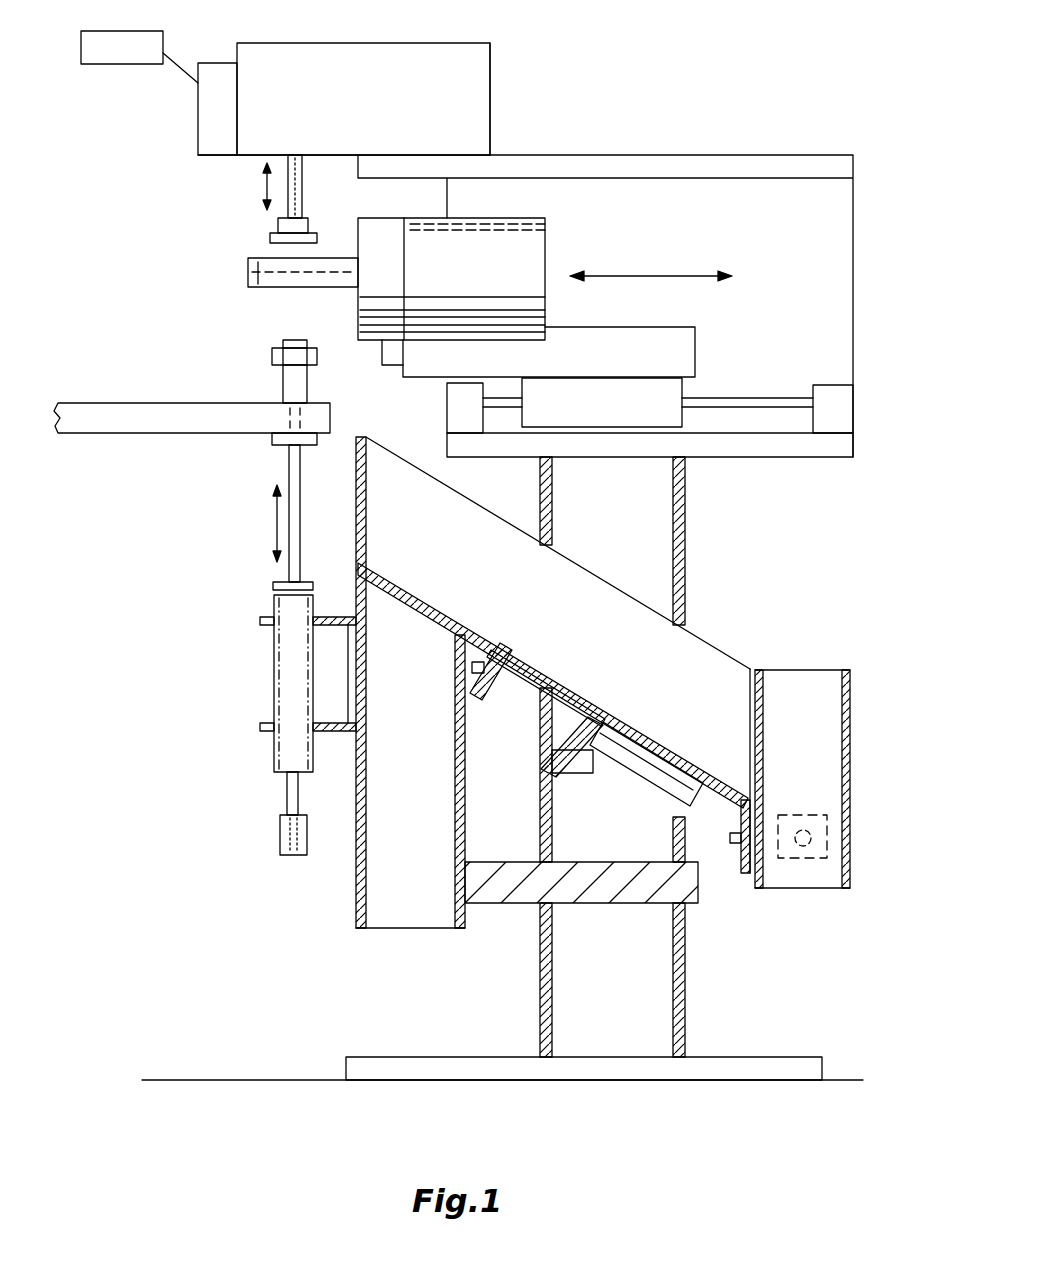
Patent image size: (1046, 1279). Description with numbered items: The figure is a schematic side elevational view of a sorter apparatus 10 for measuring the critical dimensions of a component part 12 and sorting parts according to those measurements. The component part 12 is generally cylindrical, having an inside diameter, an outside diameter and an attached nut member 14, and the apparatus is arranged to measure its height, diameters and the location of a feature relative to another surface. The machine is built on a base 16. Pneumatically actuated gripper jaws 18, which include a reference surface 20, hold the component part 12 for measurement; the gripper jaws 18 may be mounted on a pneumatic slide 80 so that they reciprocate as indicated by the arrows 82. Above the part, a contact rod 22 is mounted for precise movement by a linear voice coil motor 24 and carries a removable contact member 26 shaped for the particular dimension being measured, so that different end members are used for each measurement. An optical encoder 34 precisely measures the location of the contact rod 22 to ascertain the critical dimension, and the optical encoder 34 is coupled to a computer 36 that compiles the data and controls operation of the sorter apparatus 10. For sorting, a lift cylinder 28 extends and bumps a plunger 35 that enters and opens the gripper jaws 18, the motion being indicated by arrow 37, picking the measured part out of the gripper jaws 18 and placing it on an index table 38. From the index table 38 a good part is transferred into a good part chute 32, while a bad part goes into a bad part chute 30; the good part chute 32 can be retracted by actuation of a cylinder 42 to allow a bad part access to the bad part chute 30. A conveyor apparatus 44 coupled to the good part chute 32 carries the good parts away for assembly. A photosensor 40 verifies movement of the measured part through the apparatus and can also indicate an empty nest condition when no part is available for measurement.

The sorter apparatus 10 is at (190, 900).
The component part 12 is at (290, 385).
The nut member 14 is at (272, 358).
The base 16 is at (686, 985).
The gripper jaws 18 is at (253, 278).
The reference surface 20 is at (258, 284).
The contact rod 22 is at (303, 183).
The linear voice coil motor 24 is at (483, 102).
The removable contact member 26 is at (276, 219).
The lift cylinder 28 is at (280, 668).
The bad part chute 30 is at (393, 905).
The good part chute 32 is at (693, 663).
The optical encoder 34 is at (203, 137).
The plunger 35 is at (290, 470).
The computer 36 is at (101, 64).
The arrow 37 is at (277, 522).
The index table 38 is at (98, 402).
The photosensor 40 is at (392, 362).
The cylinder 42 is at (655, 780).
The conveyor apparatus 44 is at (785, 888).
The pneumatic slide 80 is at (540, 418).
The arrows 82 is at (650, 278).